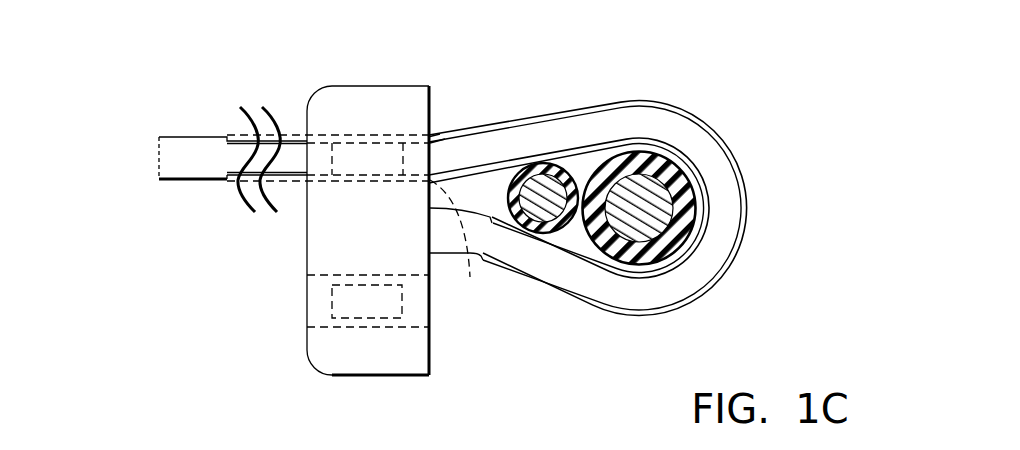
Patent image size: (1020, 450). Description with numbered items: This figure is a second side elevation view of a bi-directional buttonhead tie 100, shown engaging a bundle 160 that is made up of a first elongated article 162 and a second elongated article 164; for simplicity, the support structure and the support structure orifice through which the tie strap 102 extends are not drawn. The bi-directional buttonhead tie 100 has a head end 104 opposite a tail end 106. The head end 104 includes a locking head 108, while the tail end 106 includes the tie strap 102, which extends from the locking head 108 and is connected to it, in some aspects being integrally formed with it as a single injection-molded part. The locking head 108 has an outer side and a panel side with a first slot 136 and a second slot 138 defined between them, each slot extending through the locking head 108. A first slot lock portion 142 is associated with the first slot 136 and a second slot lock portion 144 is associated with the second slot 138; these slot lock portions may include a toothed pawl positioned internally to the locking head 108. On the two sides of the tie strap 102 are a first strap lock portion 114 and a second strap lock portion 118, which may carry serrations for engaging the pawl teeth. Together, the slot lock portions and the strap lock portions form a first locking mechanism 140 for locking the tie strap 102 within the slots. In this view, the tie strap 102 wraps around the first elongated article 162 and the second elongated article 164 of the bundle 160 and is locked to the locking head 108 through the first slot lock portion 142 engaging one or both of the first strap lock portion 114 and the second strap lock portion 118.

The bi-directional buttonhead tie 100 is at (150, 65).
The tie strap 102 is at (175, 168).
The head end 104 is at (307, 248).
The tail end 106 is at (158, 152).
The locking head 108 is at (382, 86).
The first strap lock portion 114 is at (460, 243).
The second strap lock portion 118 is at (428, 137).
The first slot 136 is at (333, 140).
The second slot 138 is at (347, 327).
The first locking mechanism 140 is at (288, 164).
The first slot lock portion 142 is at (437, 143).
The second slot lock portion 144 is at (330, 293).
The bundle 160 is at (780, 205).
The first elongated article 162 is at (557, 212).
The second elongated article 164 is at (655, 192).